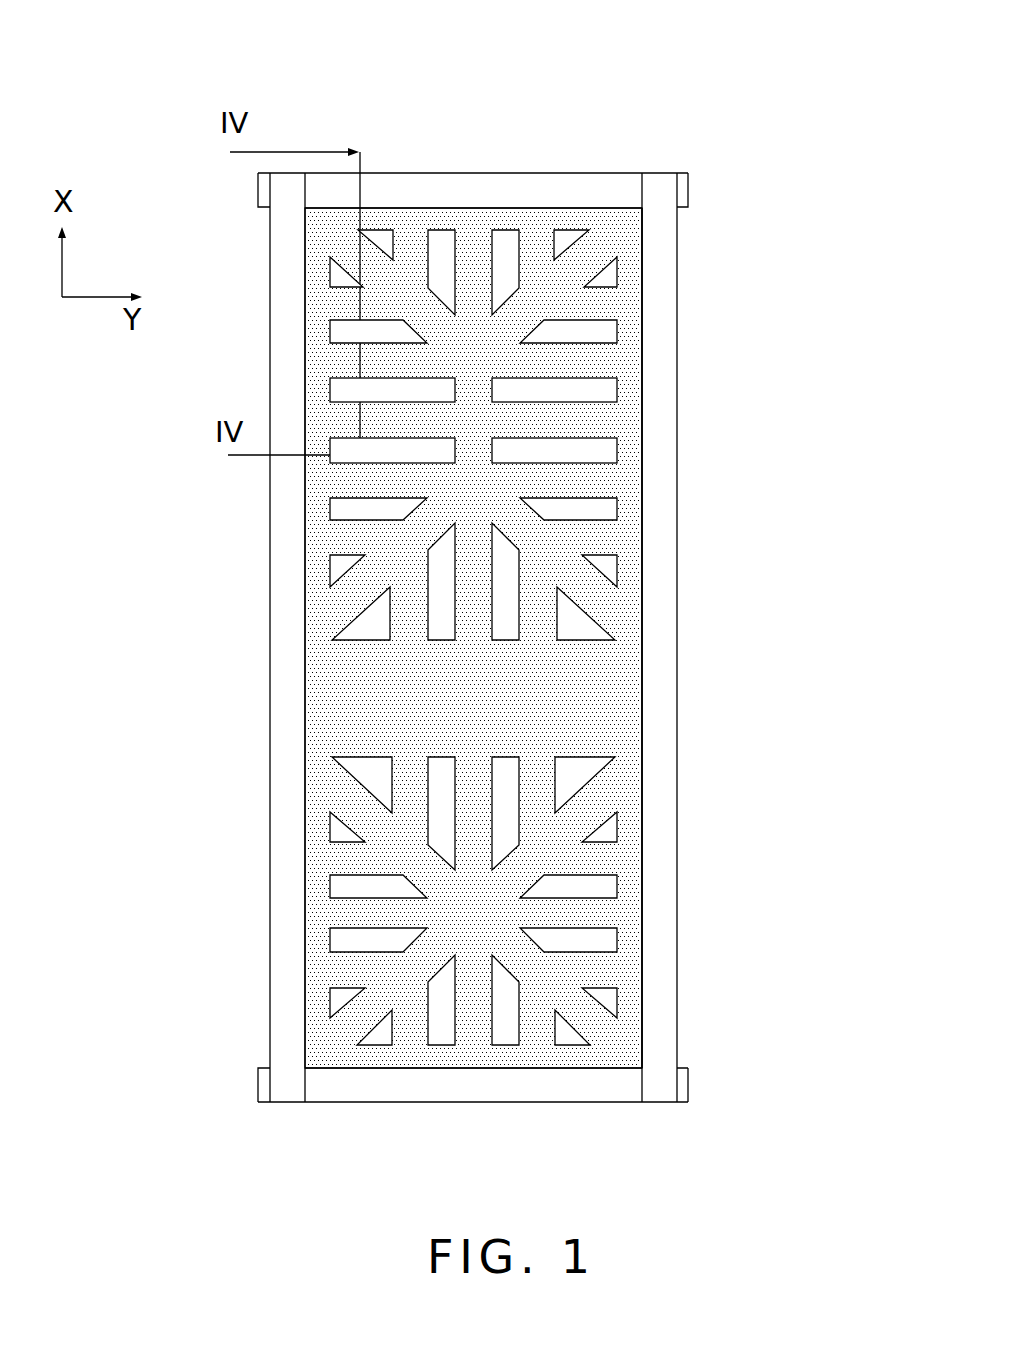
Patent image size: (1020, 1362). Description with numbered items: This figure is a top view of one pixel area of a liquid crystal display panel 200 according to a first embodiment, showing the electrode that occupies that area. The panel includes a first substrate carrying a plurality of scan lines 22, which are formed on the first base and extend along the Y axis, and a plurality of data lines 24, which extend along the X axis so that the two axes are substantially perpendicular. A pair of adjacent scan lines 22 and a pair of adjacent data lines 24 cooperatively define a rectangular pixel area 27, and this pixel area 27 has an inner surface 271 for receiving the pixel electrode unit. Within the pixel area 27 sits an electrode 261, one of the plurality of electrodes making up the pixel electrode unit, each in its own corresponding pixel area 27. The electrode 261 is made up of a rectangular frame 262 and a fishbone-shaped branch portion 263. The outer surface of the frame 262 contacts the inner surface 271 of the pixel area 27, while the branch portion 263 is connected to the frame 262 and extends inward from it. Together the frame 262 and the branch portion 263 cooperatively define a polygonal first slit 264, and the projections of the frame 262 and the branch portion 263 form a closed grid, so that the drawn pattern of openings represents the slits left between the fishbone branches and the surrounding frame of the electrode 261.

The liquid crystal display panel 200 is at (506, 54).
The scan lines 22 is at (462, 197).
The data lines 24 is at (293, 637).
The pixel area 27 is at (539, 204).
The first slit 264 is at (587, 447).
The inner surface 271 is at (645, 497).
The electrode 261 is at (787, 605).
The frame 262 is at (622, 613).
The branch portion 263 is at (575, 705).